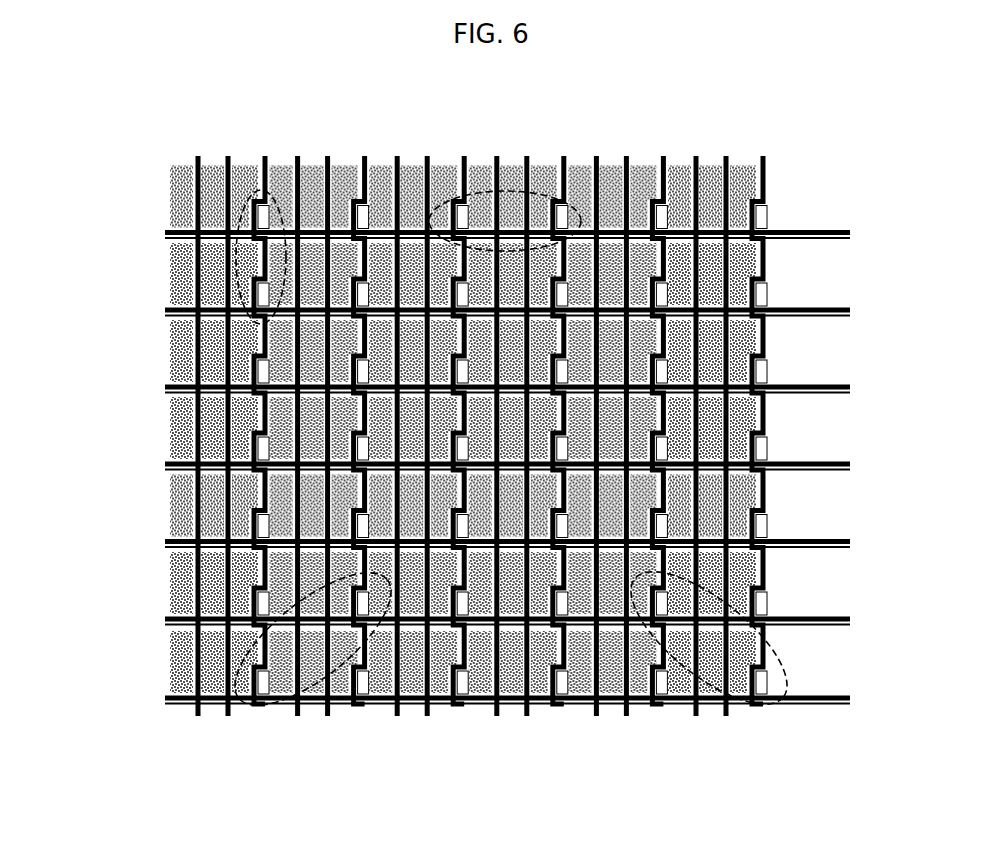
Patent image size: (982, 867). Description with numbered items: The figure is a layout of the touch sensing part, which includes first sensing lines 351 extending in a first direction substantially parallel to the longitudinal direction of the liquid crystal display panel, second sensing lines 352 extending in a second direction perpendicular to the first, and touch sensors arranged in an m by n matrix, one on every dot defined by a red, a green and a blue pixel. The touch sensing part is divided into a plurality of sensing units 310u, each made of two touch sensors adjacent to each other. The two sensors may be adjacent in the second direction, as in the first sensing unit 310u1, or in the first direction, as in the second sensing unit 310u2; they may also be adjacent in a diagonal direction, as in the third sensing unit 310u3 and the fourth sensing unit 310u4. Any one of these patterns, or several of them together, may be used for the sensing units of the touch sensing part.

The first sensing unit 310u1 is at (258, 183).
The second sensing unit 310u2 is at (497, 184).
The third sensing unit 310u3 is at (252, 700).
The fourth sensing unit 310u4 is at (763, 702).
The sensing unit 310u is at (690, 815).
The first sensing line 351 is at (843, 229).
The second sensing line 352 is at (758, 151).